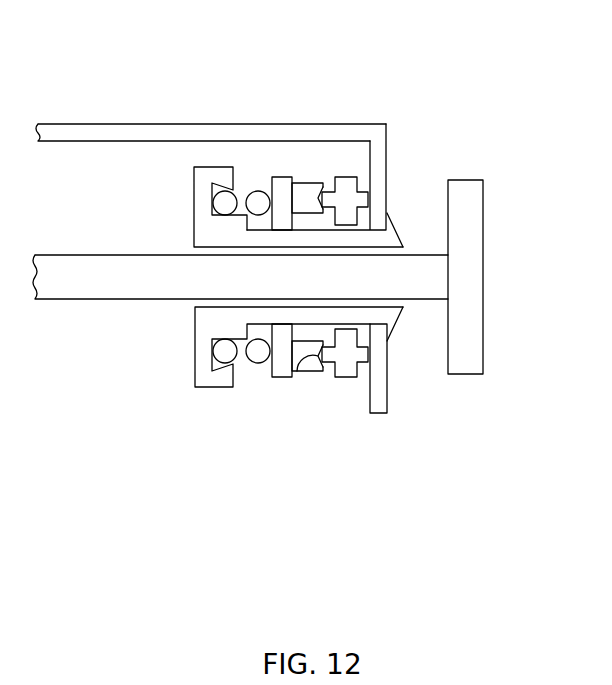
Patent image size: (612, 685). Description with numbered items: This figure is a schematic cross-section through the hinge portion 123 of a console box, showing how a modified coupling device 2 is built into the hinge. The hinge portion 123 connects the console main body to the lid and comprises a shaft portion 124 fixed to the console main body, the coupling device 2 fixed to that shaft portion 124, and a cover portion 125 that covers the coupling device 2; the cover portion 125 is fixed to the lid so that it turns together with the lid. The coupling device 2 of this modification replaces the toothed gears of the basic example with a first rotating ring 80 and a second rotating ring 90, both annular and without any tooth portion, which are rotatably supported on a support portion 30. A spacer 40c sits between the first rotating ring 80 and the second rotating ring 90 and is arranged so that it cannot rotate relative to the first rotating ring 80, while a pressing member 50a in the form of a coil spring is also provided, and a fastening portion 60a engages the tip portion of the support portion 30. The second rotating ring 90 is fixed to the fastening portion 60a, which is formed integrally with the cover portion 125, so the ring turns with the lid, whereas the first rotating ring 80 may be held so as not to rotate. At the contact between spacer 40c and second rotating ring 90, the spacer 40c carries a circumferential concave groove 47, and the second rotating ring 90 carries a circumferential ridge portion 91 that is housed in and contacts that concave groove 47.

The coupling device 2 is at (174, 392).
The support portion 30 is at (184, 344).
The spacer 40c is at (301, 384).
The concave groove 47 is at (301, 382).
The pressing member 50a is at (252, 365).
The fastening portion 60a is at (387, 155).
The first rotating ring 80 is at (276, 383).
The second rotating ring 90 is at (345, 390).
The ridge portion 91 is at (326, 366).
The hinge portion 123 is at (397, 79).
The shaft portion 124 is at (483, 273).
The cover portion 125 is at (213, 124).